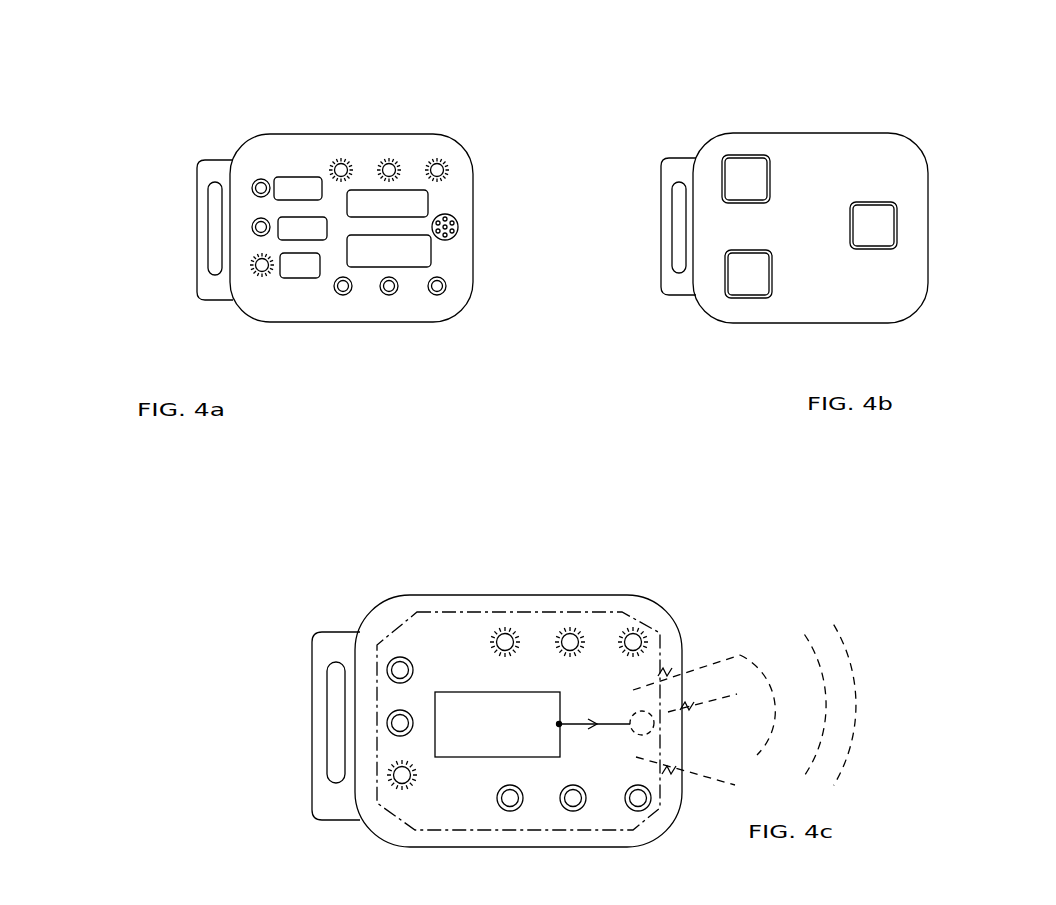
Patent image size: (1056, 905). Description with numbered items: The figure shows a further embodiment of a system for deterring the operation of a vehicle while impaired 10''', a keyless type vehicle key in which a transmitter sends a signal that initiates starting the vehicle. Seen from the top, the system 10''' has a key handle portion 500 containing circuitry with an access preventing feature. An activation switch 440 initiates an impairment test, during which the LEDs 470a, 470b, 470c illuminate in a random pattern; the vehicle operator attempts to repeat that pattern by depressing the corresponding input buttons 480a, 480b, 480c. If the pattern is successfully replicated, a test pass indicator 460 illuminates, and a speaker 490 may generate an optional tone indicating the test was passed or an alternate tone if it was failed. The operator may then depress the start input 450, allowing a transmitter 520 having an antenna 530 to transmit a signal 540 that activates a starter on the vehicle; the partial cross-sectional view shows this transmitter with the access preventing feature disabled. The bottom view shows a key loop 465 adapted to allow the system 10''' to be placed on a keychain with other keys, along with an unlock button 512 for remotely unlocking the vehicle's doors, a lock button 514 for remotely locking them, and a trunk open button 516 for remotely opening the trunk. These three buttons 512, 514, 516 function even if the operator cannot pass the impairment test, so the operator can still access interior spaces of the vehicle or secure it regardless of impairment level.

In FIG. 4a, the system for deterring the operation of a vehicle while impaired 10''' is at (350, 216).
In FIG. 4a, the key handle portion 500 is at (275, 133).
In FIG. 4b, the key handle portion 500 is at (850, 131).
In FIG. 4a, the activation switch 440 is at (267, 174).
In FIG. 4a, the start input 450 is at (255, 213).
In FIG. 4a, the test pass indicator 460 is at (248, 262).
In FIG. 4a, the key loop 465 is at (217, 260).
In FIG. 4b, the key loop 465 is at (680, 230).
In FIG. 4a, the LED 470a is at (339, 157).
In FIG. 4a, the LED 470b is at (393, 155).
In FIG. 4a, the LED 470c is at (438, 157).
In FIG. 4a, the input button 480a is at (335, 295).
In FIG. 4a, the input button 480b is at (393, 295).
In FIG. 4a, the input button 480c is at (445, 296).
In FIG. 4a, the speaker 490 is at (451, 238).
In FIG. 4b, the unlock button 512 is at (745, 177).
In FIG. 4b, the lock button 514 is at (878, 227).
In FIG. 4b, the trunk open button 516 is at (746, 277).
In FIG. 4c, the transmitter 520 is at (478, 681).
In FIG. 4c, the antenna 530 is at (602, 711).
In FIG. 4c, the signal 540 is at (707, 703).